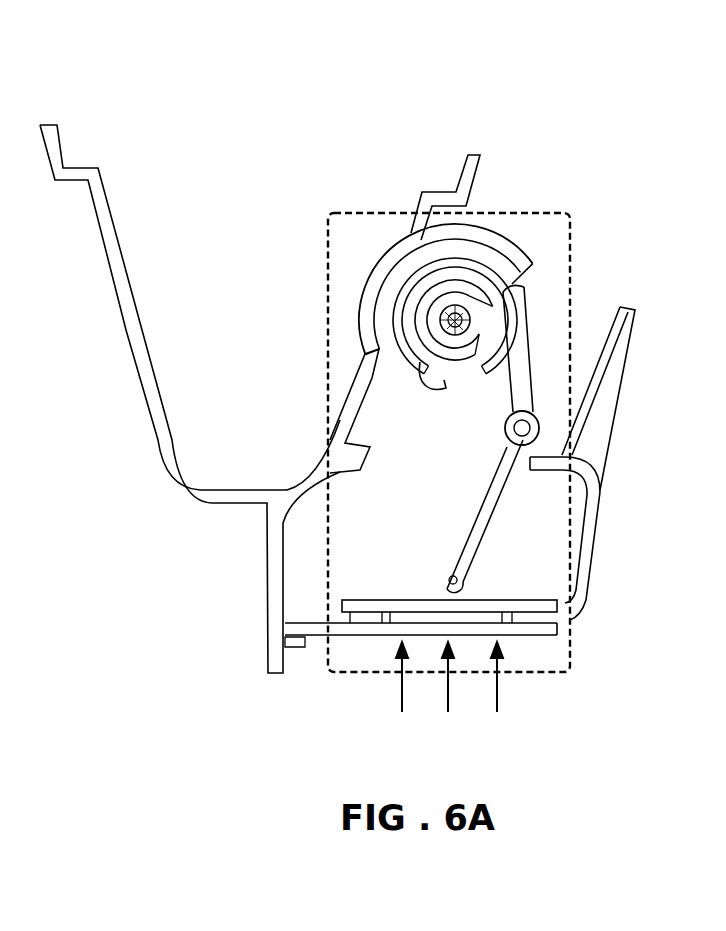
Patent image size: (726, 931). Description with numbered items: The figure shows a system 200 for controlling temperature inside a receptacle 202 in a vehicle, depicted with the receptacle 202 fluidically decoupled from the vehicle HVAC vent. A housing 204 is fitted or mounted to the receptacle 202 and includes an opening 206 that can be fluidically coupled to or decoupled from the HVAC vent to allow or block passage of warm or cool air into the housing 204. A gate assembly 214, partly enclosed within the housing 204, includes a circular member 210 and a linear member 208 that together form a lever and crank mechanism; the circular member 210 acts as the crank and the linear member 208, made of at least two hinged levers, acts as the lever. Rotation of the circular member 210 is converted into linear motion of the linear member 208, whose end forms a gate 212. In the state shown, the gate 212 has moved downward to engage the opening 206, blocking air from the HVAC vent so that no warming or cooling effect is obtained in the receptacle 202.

The system 200 is at (541, 78).
The receptacle 202 is at (123, 320).
The housing 204 is at (588, 572).
The opening 206 is at (397, 637).
The linear member 208 is at (530, 380).
The circular member 210 is at (530, 305).
The gate 212 is at (537, 610).
The gate assembly 214 is at (327, 285).